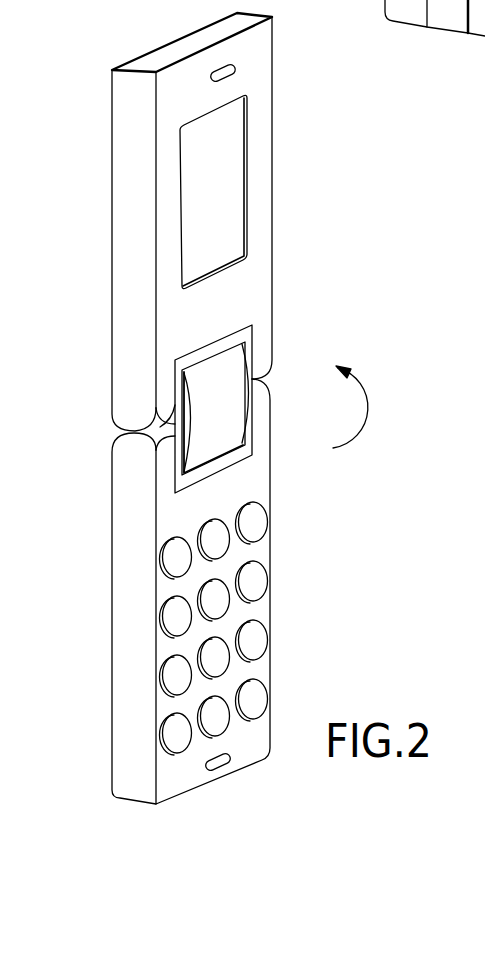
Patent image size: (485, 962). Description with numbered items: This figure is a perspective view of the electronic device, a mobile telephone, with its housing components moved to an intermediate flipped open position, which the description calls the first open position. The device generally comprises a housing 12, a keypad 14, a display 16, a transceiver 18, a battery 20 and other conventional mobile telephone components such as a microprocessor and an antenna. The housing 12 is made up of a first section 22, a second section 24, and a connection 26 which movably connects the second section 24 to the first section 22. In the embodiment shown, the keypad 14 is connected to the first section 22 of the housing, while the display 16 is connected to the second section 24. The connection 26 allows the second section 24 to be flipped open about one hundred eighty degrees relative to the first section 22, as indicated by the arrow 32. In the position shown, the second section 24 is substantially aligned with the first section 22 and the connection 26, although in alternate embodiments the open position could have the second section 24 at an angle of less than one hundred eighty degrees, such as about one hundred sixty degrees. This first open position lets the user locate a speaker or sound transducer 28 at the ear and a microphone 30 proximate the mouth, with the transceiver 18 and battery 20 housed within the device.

The housing 12 is at (267, 60).
The keypad 14 is at (258, 640).
The display 16 is at (238, 157).
The transceiver 18 is at (118, 583).
The battery 20 is at (110, 688).
The first section 22 is at (241, 628).
The second section 24 is at (112, 160).
The connection 26 is at (187, 408).
The speaker or sound transducer 28 is at (223, 66).
The microphone 30 is at (220, 766).
The arrow 32 is at (372, 386).